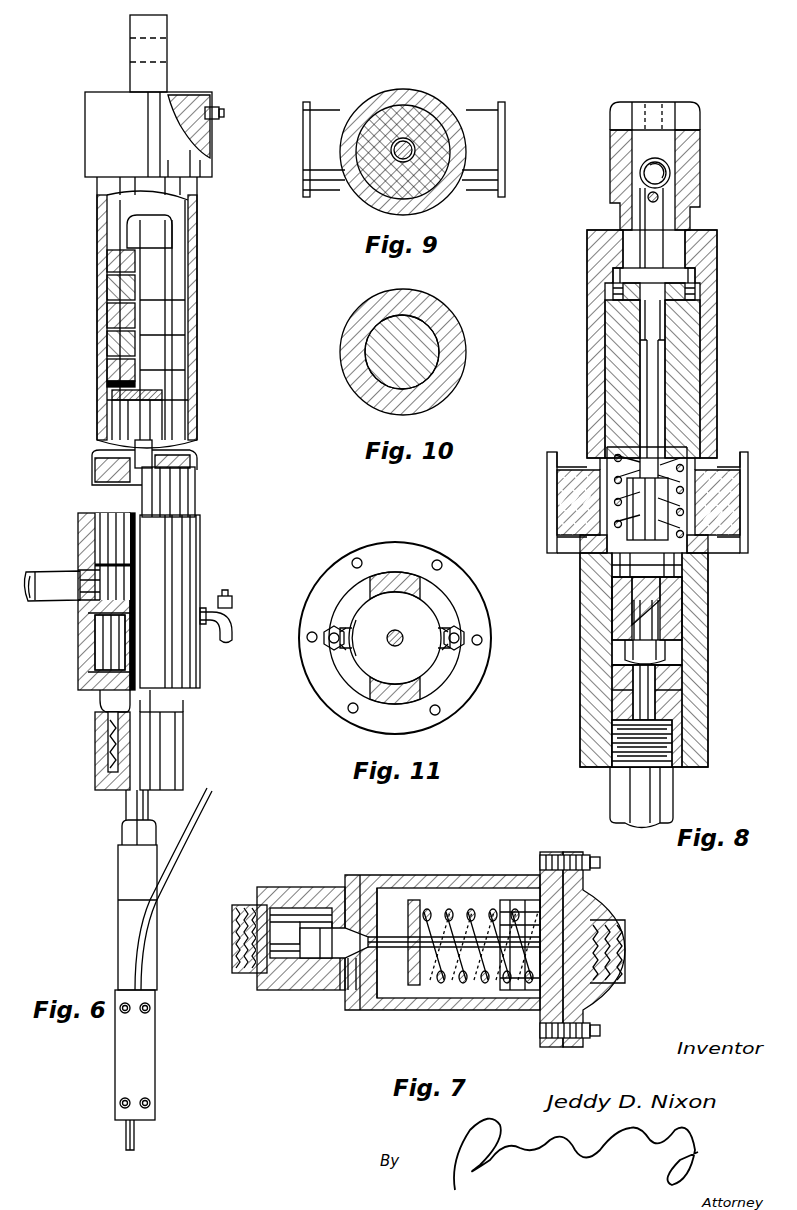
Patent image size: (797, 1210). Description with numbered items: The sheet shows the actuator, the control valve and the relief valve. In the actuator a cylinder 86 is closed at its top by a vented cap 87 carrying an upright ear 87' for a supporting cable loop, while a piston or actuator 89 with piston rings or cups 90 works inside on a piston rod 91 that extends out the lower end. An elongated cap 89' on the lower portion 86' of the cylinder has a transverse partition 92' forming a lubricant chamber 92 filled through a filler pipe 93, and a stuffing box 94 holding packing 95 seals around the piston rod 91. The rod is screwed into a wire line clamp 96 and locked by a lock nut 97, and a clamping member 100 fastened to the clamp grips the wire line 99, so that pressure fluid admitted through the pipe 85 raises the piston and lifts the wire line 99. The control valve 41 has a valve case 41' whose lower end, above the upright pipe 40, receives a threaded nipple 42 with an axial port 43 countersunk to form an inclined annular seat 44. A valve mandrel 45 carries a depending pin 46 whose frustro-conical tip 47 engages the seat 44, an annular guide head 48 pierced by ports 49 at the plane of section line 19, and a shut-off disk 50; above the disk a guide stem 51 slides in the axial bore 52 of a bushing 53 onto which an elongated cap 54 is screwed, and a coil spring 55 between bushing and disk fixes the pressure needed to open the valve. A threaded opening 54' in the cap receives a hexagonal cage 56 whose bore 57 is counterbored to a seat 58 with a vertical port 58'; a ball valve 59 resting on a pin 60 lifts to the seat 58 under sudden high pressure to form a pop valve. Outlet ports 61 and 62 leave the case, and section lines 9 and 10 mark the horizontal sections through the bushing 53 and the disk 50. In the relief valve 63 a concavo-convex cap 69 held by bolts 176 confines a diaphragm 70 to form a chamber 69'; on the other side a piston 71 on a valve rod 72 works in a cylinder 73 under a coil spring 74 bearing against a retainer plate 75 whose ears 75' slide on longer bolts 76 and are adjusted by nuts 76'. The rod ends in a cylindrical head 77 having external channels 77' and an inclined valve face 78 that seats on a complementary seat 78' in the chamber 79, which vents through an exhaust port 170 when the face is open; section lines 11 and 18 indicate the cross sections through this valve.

In FIG. 6, the upright ear 87' is at (173, 53).
In FIG. 6, the vented cap 87 is at (137, 134).
In FIG. 6, the piston or actuator 89 is at (171, 308).
In FIG. 6, the piston rings or cups 90 is at (107, 290).
In FIG. 6, the cylinder 86 is at (123, 419).
In FIG. 6, the piston rod 91 is at (155, 462).
In FIG. 6, the lower body tube 86' is at (190, 492).
In FIG. 6, the elongated cap 89' is at (188, 601).
In FIG. 6, the lubricant chamber 92 is at (80, 601).
In FIG. 6, the transverse partition 92' is at (75, 642).
In FIG. 6, the pipe 85 is at (66, 601).
In FIG. 6, the filler pipe 93 is at (235, 632).
In FIG. 6, the packing 95 is at (100, 732).
In FIG. 6, the stuffing box 94 is at (183, 751).
In FIG. 6, the lock nut 97 is at (126, 832).
In FIG. 6, the wire line 99 is at (190, 832).
In FIG. 6, the wire line clamp 96 is at (157, 973).
In FIG. 6, the clamping member 100 is at (150, 1047).
In FIG. 9, the valve case 41' is at (404, 139).
In FIG. 10, the valve case 41' is at (384, 352).
In FIG. 8, the valve case 41' is at (623, 607).
In FIG. 9, the bushing 53 is at (432, 112).
In FIG. 8, the bushing 53 is at (622, 326).
In FIG. 9, the guide stem 51 is at (412, 160).
In FIG. 8, the guide stem 51 is at (660, 372).
In FIG. 10, the shut-off disk 50 is at (425, 348).
In FIG. 8, the shut-off disk 50 is at (690, 548).
In FIG. 11, the circular piston 71 is at (362, 672).
In FIG. 7, the circular piston 71 is at (535, 900).
In FIG. 11, the bolts 176 is at (432, 562).
In FIG. 7, the bolts 176 is at (600, 862).
In FIG. 11, the cylinder 73 is at (362, 600).
In FIG. 7, the cylinder 73 is at (527, 992).
In FIG. 11, the retainer plate 75 is at (424, 631).
In FIG. 11, the ears 75' is at (312, 664).
In FIG. 11, the valve rod 72 is at (404, 640).
In FIG. 7, the valve rod 72 is at (414, 986).
In FIG. 11, the rods or bolts 76 is at (378, 638).
In FIG. 11, the nuts 76' is at (393, 642).
In FIG. 8, the seat 58 is at (677, 116).
In FIG. 8, the vertical port 58' is at (678, 95).
In FIG. 8, the hexagonal elongated cage 56 is at (702, 156).
In FIG. 8, the ball valve 59 is at (640, 174).
In FIG. 8, the bore 57 is at (672, 183).
In FIG. 8, the pin 60 is at (648, 198).
In FIG. 8, the screw-threaded opening 54' is at (684, 239).
In FIG. 8, the cap or head 54 is at (617, 284).
In FIG. 8, the operating or control valve 41 is at (672, 344).
In FIG. 8, the axial bore 52 is at (645, 332).
In FIG. 8, the section line 9— 9 is at (750, 385).
In FIG. 8, the outlet port 62 is at (560, 530).
In FIG. 8, the outlet port 61 is at (748, 506).
In FIG. 8, the coil spring 55 is at (682, 453).
In FIG. 8, the section line 10— 10 is at (765, 555).
In FIG. 8, the valve mandrel 45 is at (690, 572).
In FIG. 8, the section line 19— 19 is at (740, 598).
In FIG. 8, the guide head or collar 48 is at (650, 612).
In FIG. 8, the ducts or ports 49 is at (645, 605).
In FIG. 8, the depending stud or pin 46 is at (665, 652).
In FIG. 8, the frustro-conical tip 47 is at (612, 700).
In FIG. 8, the inclined annular seat 44 is at (636, 668).
In FIG. 8, the axial bore or port 43 is at (656, 690).
In FIG. 8, the nipple 42 is at (708, 742).
In FIG. 8, the upright pipe 40 is at (673, 801).
In FIG. 7, the chamber 79 is at (272, 970).
In FIG. 7, the relief valve 63 is at (432, 874).
In FIG. 7, the external channels 77' is at (291, 903).
In FIG. 7, the cylindrical head or boss 77 is at (345, 889).
In FIG. 7, the inclined valve face 78 is at (339, 907).
In FIG. 7, the complementary seat 78' is at (332, 986).
In FIG. 7, the exhaust port 170 is at (368, 1005).
In FIG. 7, the coil spring 74 is at (477, 988).
In FIG. 7, the diaphragm 70 is at (568, 992).
In FIG. 7, the concavo-convex cap or head 69 is at (605, 949).
In FIG. 7, the chamber 69' is at (624, 939).
In FIG. 7, the section line 18- 18 is at (302, 1040).
In FIG. 7, the section line 11— 11 is at (392, 1035).